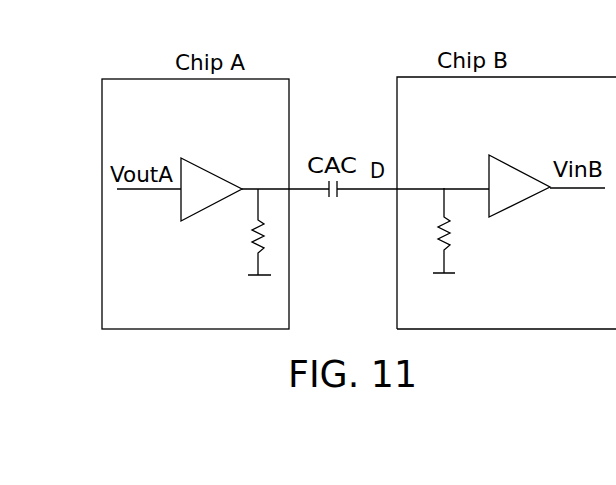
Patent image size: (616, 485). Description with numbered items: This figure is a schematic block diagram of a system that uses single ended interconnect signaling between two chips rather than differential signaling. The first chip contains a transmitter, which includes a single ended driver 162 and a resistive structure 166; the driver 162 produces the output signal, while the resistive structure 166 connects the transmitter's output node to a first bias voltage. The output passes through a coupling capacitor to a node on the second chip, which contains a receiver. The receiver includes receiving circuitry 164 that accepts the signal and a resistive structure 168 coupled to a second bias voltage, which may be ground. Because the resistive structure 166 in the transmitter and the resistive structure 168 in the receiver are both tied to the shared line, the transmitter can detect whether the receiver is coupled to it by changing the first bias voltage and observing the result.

The single ended driver 162 is at (185, 222).
The receiving circuitry 164 is at (540, 193).
The resistive structure 166 is at (258, 237).
The resistive structure 168 is at (444, 240).